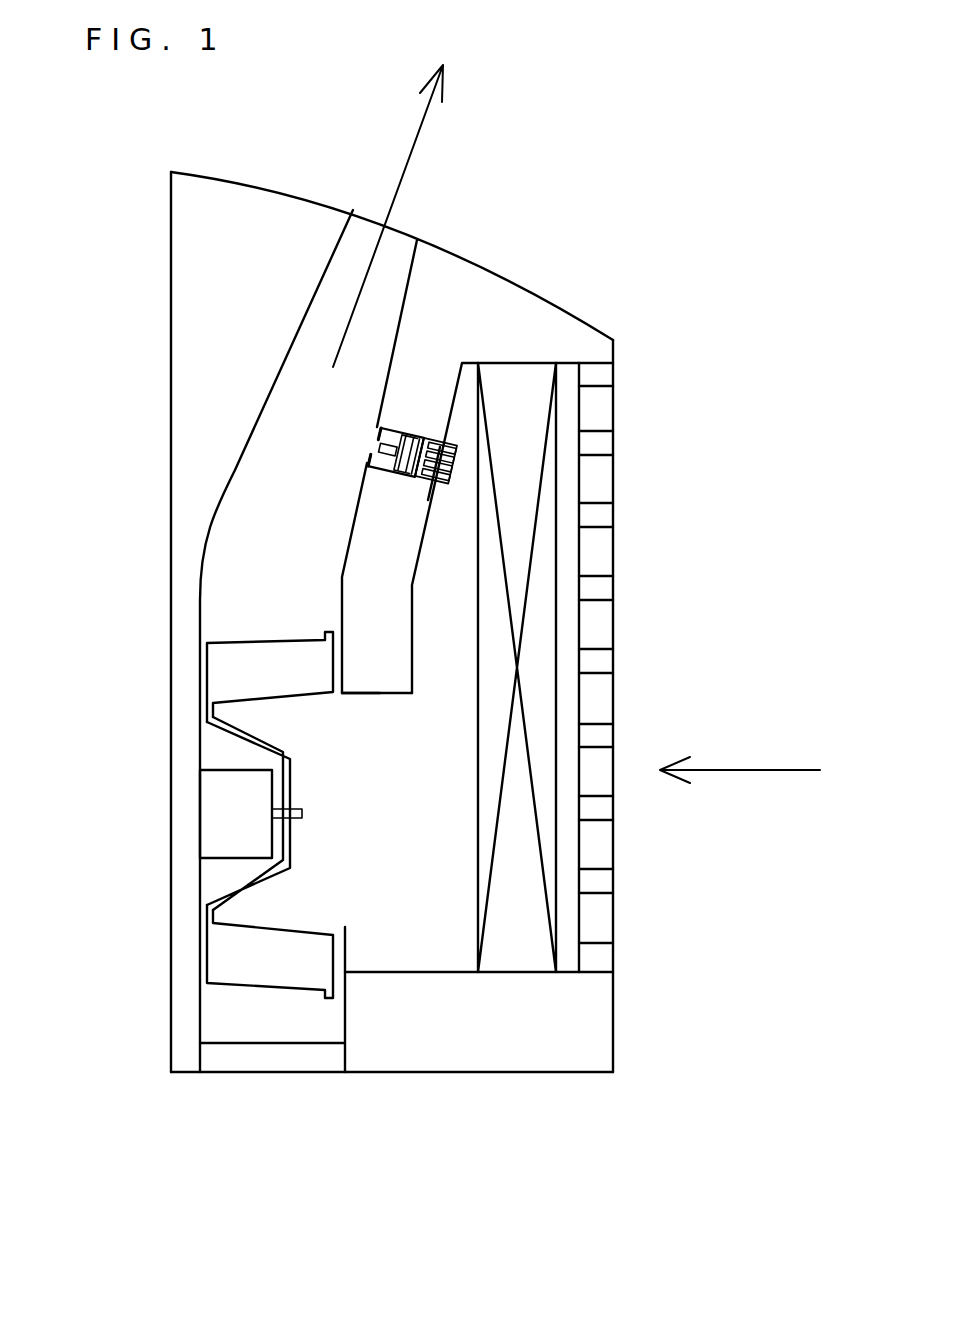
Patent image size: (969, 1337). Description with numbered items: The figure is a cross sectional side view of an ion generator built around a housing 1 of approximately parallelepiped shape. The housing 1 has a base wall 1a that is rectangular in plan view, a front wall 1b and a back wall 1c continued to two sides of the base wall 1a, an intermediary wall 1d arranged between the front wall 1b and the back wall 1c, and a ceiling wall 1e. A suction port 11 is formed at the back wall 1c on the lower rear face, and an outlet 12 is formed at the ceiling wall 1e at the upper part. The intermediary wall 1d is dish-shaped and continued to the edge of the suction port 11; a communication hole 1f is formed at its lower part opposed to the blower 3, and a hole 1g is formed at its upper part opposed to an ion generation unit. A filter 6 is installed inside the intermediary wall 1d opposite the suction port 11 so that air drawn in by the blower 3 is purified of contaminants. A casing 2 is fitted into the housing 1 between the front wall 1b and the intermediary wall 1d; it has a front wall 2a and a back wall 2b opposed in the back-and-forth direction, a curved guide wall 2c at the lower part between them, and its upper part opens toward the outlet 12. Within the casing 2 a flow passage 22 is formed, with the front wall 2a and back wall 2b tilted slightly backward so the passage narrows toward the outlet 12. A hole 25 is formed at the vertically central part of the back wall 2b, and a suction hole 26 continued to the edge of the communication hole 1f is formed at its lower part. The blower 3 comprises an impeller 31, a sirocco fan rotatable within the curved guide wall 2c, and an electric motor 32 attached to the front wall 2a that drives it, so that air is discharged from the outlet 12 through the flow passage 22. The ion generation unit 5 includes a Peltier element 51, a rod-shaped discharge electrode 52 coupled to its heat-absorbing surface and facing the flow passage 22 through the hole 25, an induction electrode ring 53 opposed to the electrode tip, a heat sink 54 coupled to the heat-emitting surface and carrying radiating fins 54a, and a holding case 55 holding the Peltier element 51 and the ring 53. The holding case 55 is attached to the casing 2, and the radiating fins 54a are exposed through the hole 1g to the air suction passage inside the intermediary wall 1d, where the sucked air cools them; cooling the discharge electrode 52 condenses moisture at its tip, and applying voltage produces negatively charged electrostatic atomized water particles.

The housing 1 is at (384, 629).
The base wall 1a is at (471, 1074).
The front wall 1b is at (171, 467).
The back wall 1c is at (613, 348).
The intermediary wall 1d is at (415, 618).
The ceiling wall 1e is at (218, 172).
The communication hole 1f is at (397, 696).
The hole 1g is at (425, 492).
The casing 2 is at (286, 688).
The front wall 2a is at (305, 315).
The back wall 2b is at (404, 302).
The curved guide wall 2c is at (272, 1047).
The blower 3 is at (214, 791).
The ion generation unit 5 is at (494, 445).
The filter 6 is at (550, 842).
The suction port 11 is at (600, 627).
The outlet 12 is at (376, 218).
The flow passage 22 is at (312, 472).
The hole 25 is at (383, 457).
The suction hole 26 is at (355, 696).
The impeller 31 is at (245, 648).
The electric motor 32 is at (210, 833).
The Peltier element 51 is at (413, 430).
The discharge electrode 52 is at (393, 430).
The induction electrode ring 53 is at (378, 433).
The heat sink 54 is at (458, 442).
The radiating fins 54a is at (460, 462).
The holding case 55 is at (432, 436).